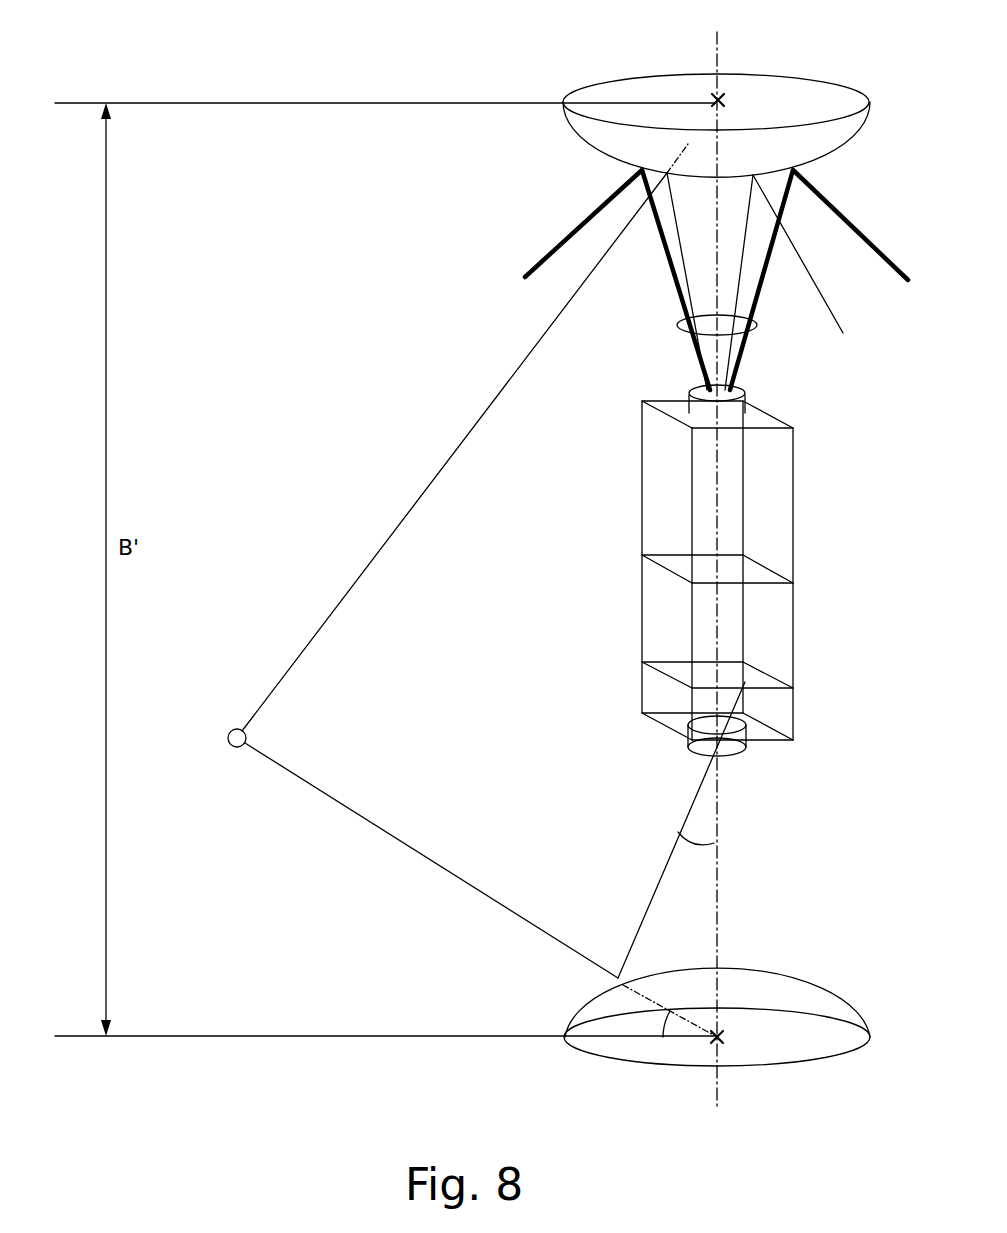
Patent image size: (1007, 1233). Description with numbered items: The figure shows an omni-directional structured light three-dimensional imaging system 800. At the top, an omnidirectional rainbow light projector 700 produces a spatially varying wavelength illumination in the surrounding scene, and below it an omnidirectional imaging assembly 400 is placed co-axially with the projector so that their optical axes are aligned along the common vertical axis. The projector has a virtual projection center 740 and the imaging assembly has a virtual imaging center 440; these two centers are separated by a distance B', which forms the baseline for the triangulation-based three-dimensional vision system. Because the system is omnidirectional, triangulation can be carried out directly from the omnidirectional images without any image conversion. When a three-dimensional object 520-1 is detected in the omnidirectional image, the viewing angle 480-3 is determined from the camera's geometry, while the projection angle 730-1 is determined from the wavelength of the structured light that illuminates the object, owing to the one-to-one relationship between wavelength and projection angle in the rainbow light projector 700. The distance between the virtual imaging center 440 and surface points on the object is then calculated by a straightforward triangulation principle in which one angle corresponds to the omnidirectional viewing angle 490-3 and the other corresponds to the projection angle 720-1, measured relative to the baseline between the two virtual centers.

The omni-directional structured light 3D imaging system 800 is at (346, 44).
The projection angle 720-1 is at (697, 127).
The virtual projection center 740 is at (720, 92).
The projection angle 730-1 is at (713, 283).
The omnidirectional rainbow light projector 700 is at (802, 505).
The omnidirectional imaging assembly 400 is at (635, 635).
The 3D object 520-1 is at (237, 729).
The viewing angle 480-3 is at (715, 842).
The omnidirectional viewing angle 490-3 is at (663, 1037).
The virtual imaging center 440 is at (727, 1037).